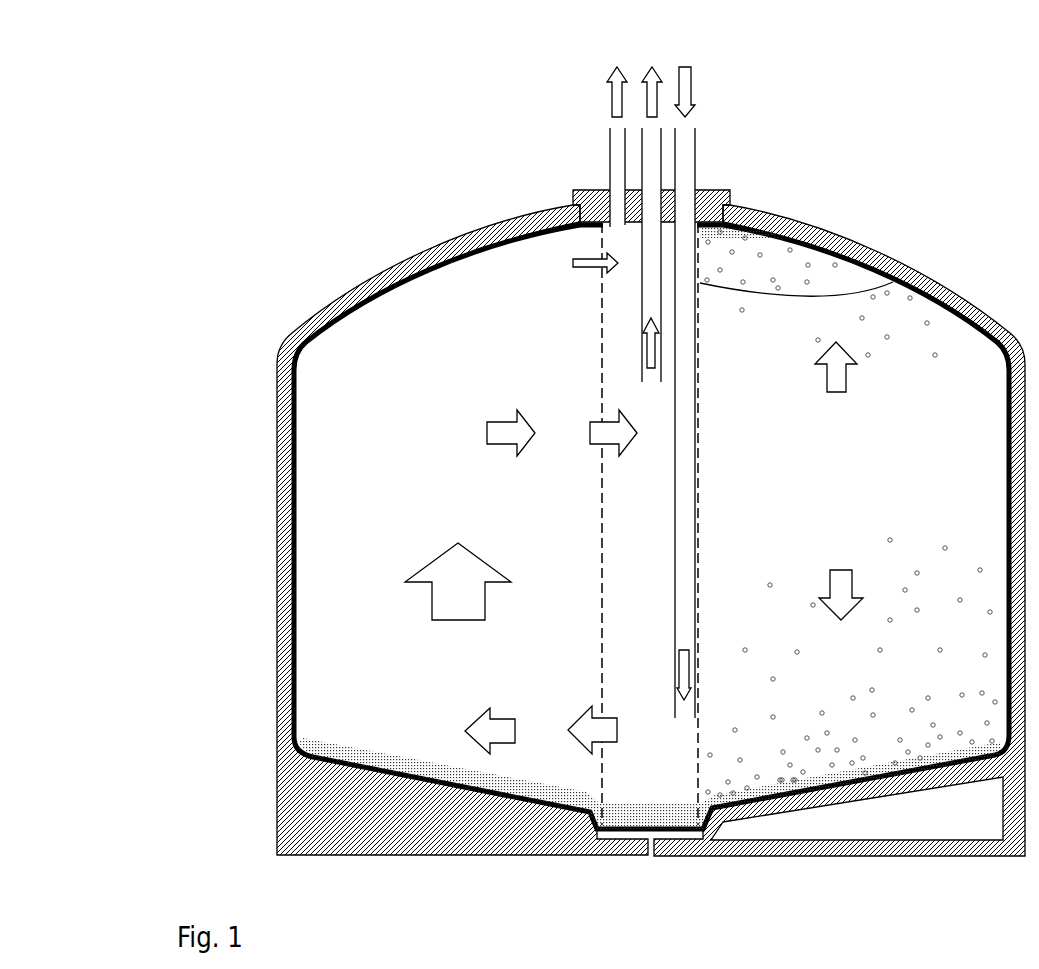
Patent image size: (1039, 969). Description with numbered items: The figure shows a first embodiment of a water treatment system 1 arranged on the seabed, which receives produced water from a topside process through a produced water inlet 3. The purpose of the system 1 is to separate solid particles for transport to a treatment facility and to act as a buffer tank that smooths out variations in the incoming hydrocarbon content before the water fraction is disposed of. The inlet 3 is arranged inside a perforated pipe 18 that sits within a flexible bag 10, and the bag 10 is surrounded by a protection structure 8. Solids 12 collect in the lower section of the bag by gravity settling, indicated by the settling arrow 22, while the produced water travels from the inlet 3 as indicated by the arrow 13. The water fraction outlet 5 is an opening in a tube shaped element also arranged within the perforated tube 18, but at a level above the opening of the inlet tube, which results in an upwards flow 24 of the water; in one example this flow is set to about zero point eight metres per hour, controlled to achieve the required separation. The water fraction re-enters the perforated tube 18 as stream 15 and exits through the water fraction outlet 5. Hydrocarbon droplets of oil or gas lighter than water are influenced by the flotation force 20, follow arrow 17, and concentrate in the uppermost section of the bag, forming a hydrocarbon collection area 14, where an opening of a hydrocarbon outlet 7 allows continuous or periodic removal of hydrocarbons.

The water treatment system 1 is at (314, 247).
The produced water inlet 3 is at (685, 372).
The water fraction outlet 5 is at (652, 204).
The hydrocarbon outlet 7 is at (617, 126).
The protection structure 8 is at (317, 315).
The flexible bag 10 is at (293, 440).
The solids 12 is at (407, 757).
The arrow 13 is at (541, 712).
The hydrocarbon collection area 14 is at (632, 227).
The stream 15 is at (557, 419).
The arrow 17 is at (576, 264).
The perforated pipe 18 is at (893, 282).
The flotation force 20 is at (836, 385).
The settling arrow 22 is at (841, 577).
The upwards flow 24 is at (458, 567).